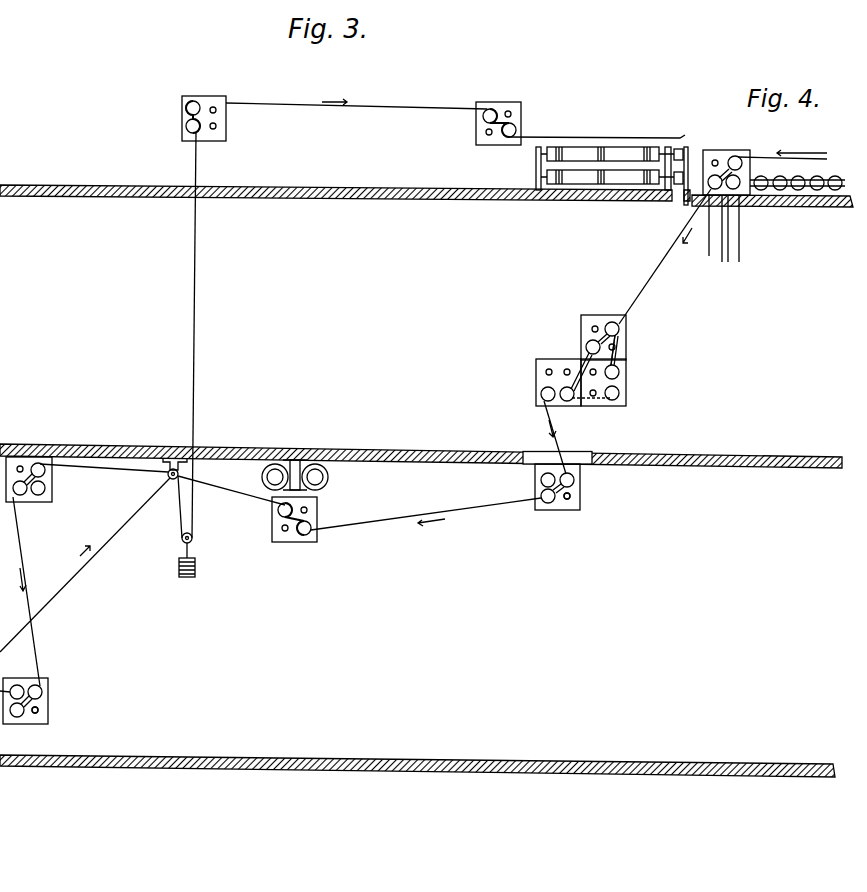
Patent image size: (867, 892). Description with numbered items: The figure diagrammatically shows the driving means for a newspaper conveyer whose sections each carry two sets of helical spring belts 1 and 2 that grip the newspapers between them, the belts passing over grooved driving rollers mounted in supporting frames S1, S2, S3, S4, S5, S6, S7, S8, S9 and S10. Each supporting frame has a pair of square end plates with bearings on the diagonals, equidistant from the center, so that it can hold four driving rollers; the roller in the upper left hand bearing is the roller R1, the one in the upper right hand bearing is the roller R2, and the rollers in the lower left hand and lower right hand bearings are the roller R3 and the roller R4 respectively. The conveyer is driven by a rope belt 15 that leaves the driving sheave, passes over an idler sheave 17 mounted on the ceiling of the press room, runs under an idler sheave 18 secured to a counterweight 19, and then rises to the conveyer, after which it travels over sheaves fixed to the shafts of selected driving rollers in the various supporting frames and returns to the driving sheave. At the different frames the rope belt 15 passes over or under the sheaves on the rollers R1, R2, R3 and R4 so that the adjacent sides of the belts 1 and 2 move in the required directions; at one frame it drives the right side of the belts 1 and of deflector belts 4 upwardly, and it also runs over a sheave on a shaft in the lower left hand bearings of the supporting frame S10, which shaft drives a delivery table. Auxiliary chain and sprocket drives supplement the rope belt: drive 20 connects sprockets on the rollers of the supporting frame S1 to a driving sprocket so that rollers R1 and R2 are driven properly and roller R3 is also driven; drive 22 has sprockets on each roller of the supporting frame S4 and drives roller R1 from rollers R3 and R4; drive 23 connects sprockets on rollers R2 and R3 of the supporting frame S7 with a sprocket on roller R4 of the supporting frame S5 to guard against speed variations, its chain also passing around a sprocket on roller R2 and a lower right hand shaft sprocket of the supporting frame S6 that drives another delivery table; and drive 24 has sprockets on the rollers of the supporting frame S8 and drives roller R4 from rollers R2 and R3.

In FIG. 3, the driving roller R1 is at (186, 106).
In FIG. 3, the driving roller R2 is at (614, 322).
In FIG. 4, the driving roller R2 is at (742, 158).
In FIG. 3, the driving roller R3 is at (186, 126).
In FIG. 4, the driving roller R3 is at (709, 180).
In FIG. 3, the driving roller R4 is at (516, 130).
In FIG. 4, the driving roller R4 is at (740, 181).
In FIG. 3, the supporting frame S1 is at (33, 725).
In FIG. 3, the supporting frame S2 is at (25, 503).
In FIG. 3, the supporting frame S3 is at (289, 543).
In FIG. 3, the supporting frame S4 is at (546, 511).
In FIG. 3, the supporting frame S5 is at (553, 407).
In FIG. 3, the supporting frame S6 is at (594, 407).
In FIG. 3, the supporting frame S7 is at (627, 332).
In FIG. 4, the supporting frame S8 is at (703, 152).
In FIG. 3, the supporting frame S9 is at (492, 146).
In FIG. 3, the supporting frame S10 is at (203, 142).
In FIG. 4, the helical spring belt 1 is at (710, 240).
In FIG. 4, the helical spring belt 2 is at (739, 246).
In FIG. 3, the deflector belt 4 is at (3, 747).
In FIG. 3, the rope belt 15 is at (5, 642).
In FIG. 3, the idler sheave 17 is at (168, 474).
In FIG. 3, the idler sheave 18 is at (193, 537).
In FIG. 3, the counterweight 19 is at (193, 578).
In FIG. 3, the chain and sprocket drive 20 is at (40, 710).
In FIG. 3, the chain and sprocket drive 22 is at (571, 495).
In FIG. 3, the chain and sprocket drive 23 is at (620, 355).
In FIG. 4, the chain and sprocket drive 24 is at (718, 162).